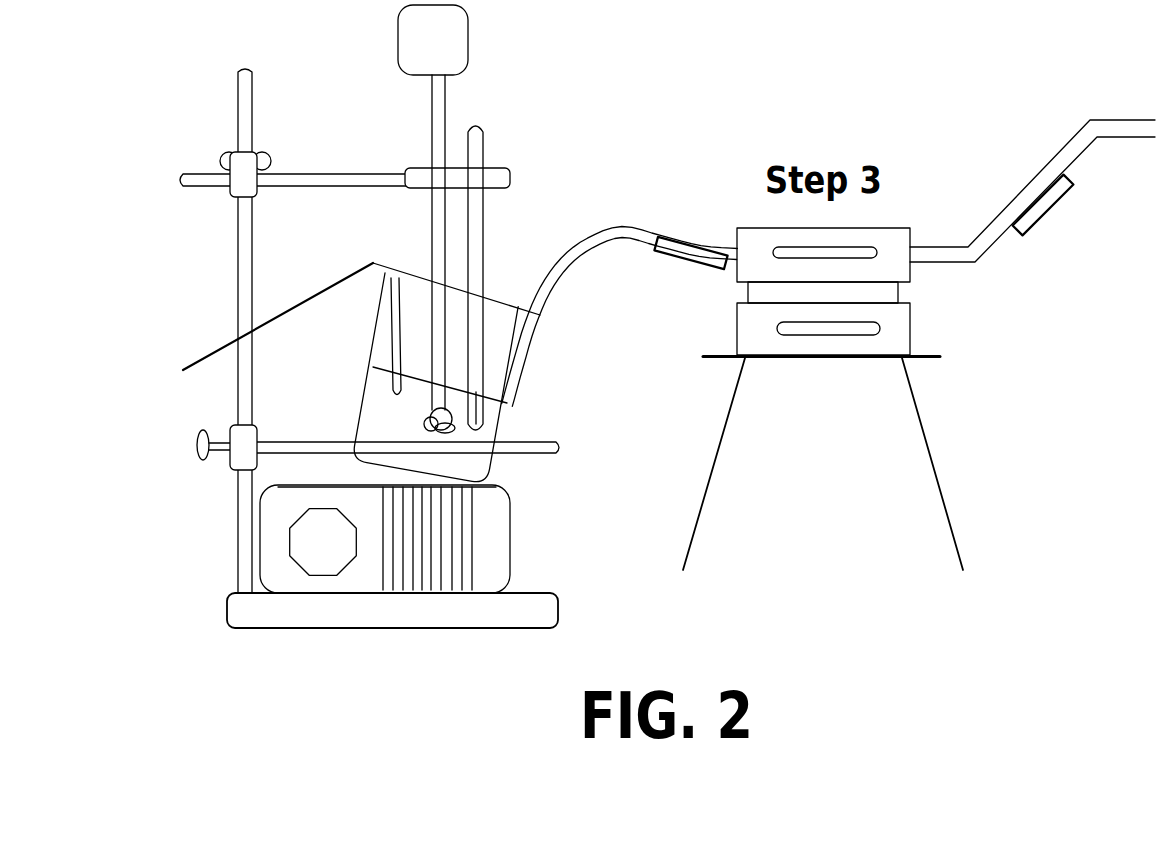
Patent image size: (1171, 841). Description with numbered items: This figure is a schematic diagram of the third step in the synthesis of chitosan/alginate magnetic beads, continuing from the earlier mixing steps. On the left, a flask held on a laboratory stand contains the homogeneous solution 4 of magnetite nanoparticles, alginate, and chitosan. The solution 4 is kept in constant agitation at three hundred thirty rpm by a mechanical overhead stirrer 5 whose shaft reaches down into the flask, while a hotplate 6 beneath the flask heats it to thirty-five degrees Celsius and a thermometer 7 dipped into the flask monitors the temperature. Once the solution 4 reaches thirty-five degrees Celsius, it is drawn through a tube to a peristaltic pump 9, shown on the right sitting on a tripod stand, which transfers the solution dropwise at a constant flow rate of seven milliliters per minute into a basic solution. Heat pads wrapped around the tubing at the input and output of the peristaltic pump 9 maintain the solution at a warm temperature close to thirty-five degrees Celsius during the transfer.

The homogeneous solution 4 is at (396, 426).
The mechanical overhead stirrer 5 is at (425, 57).
The hotplate 6 is at (387, 603).
The thermometer 7 is at (478, 147).
The peristaltic pump 9 is at (817, 343).